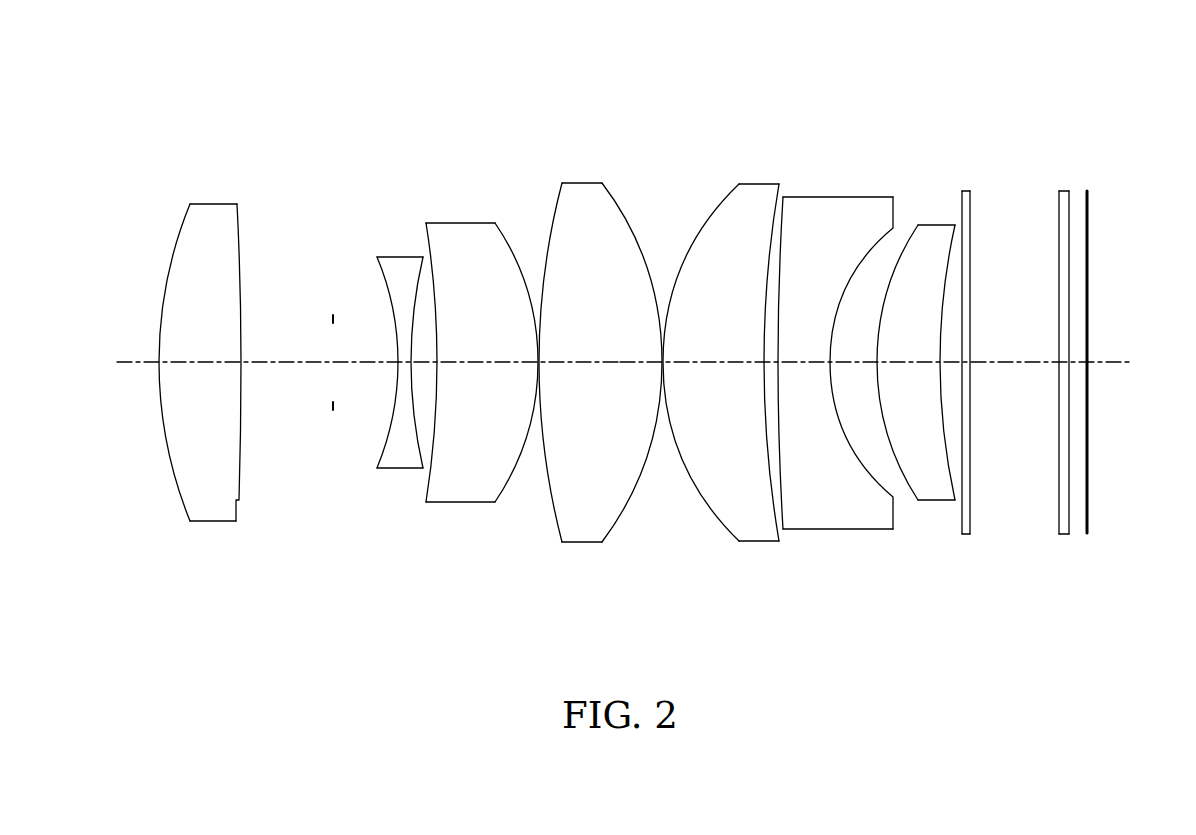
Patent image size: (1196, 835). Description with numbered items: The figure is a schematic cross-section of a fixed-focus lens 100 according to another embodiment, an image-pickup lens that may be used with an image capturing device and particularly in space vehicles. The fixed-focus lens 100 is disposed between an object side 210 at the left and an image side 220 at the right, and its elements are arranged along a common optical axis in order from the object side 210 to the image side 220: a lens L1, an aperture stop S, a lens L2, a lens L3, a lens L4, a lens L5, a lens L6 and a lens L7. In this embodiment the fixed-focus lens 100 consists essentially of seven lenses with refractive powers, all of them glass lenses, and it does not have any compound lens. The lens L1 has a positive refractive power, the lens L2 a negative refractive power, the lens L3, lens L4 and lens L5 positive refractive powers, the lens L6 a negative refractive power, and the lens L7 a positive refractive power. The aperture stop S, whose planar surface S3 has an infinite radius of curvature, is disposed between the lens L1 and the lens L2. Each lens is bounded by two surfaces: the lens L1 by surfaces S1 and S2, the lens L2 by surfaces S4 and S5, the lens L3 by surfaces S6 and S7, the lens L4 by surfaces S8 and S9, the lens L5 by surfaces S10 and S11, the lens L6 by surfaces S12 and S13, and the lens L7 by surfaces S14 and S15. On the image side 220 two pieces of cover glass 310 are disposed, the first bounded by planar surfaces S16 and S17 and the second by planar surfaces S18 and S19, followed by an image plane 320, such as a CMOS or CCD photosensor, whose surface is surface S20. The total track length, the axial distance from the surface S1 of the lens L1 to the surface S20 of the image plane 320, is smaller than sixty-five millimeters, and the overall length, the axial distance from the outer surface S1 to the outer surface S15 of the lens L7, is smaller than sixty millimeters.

The fixed-focus lens 100 is at (164, 50).
The object side 210 is at (102, 378).
The image side 220 is at (1192, 378).
The first lens L1 is at (212, 208).
The second lens L2 is at (399, 262).
The third lens L3 is at (461, 232).
The fourth lens L4 is at (582, 188).
The fifth lens L5 is at (758, 190).
The sixth lens L6 is at (842, 203).
The seventh lens L7 is at (932, 230).
The aperture stop S is at (333, 318).
The surface of lens L1 S1 is at (183, 503).
The surface of lens L1 S2 is at (237, 500).
The surface of aperture stop S3 is at (333, 405).
The surface of lens L2 S4 is at (383, 443).
The surface of lens L2 S5 is at (420, 447).
The surface of lens L3 S6 is at (430, 457).
The surface of lens L3 S7 is at (512, 482).
The surface of lens L4 S8 is at (553, 515).
The surface of lens L4 S9 is at (618, 520).
The surface of lens L5 S10 is at (715, 517).
The surface of lens L5 S11 is at (777, 505).
The surface of lens L6 S12 is at (785, 483).
The surface of lens L6 S13 is at (893, 486).
The surface of lens L7 S14 is at (908, 490).
The outer surface of lens L7 S15 is at (953, 493).
The surface of cover glass S16 is at (961, 502).
The surface of cover glass S17 is at (970, 403).
The surface of cover glass S18 is at (1059, 523).
The surface of cover glass S19 is at (1069, 513).
The surface of image plane S20 is at (1087, 475).
The cover glass 310 is at (966, 193).
The image plane 320 is at (1088, 205).